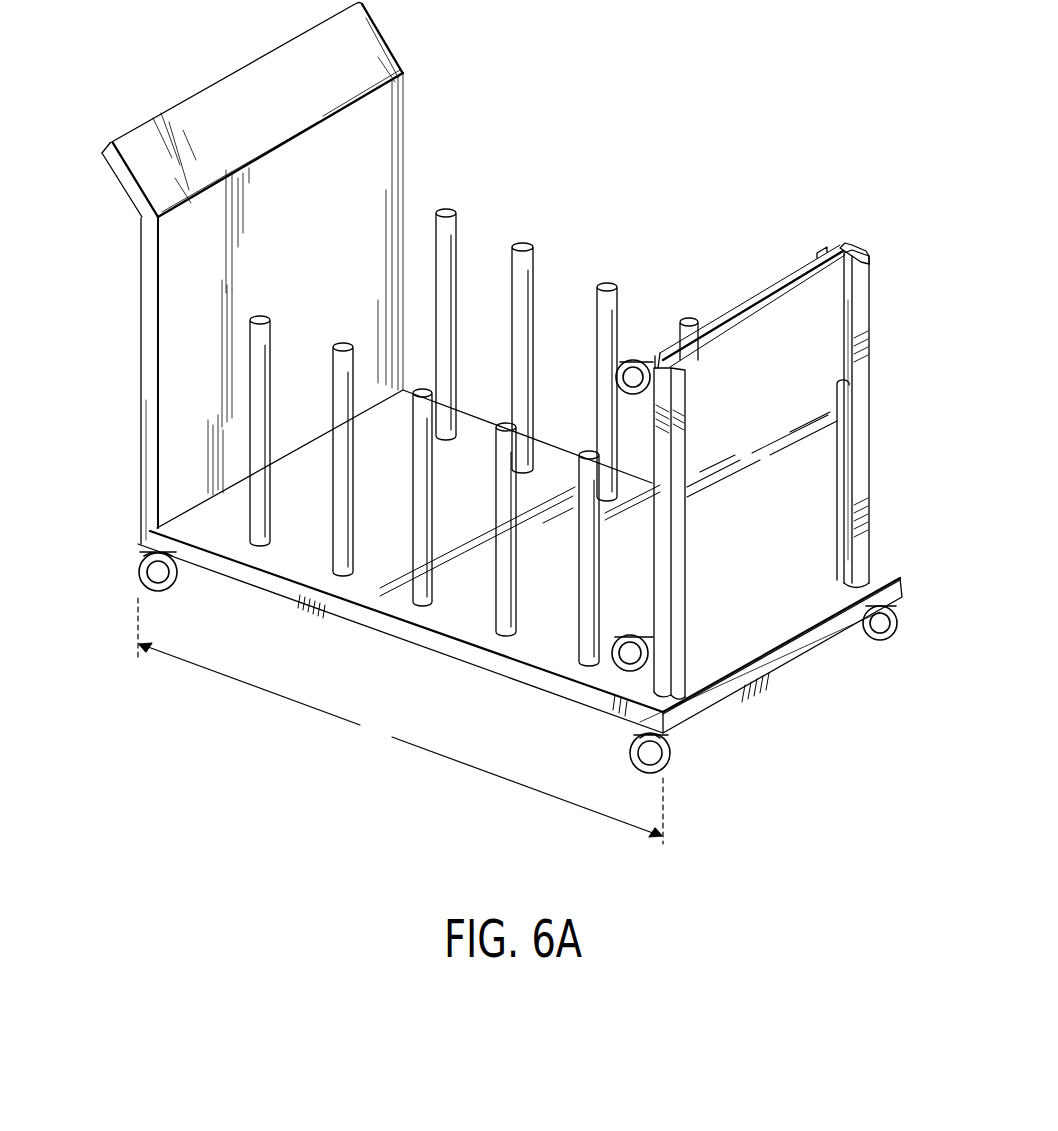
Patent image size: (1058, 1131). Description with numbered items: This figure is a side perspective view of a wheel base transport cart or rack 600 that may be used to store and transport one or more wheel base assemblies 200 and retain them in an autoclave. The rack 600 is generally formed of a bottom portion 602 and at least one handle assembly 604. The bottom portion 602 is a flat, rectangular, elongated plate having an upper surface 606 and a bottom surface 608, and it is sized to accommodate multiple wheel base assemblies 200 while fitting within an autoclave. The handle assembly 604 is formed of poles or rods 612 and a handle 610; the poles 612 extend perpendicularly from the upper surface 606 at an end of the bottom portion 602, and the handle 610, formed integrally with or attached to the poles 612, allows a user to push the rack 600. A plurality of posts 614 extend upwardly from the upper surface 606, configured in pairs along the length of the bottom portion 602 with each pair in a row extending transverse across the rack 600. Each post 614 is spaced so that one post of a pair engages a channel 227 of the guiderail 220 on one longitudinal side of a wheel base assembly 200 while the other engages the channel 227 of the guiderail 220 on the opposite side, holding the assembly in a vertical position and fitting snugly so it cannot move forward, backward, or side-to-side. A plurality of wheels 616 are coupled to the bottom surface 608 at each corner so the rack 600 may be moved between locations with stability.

The wheel base transport cart or rack 600 is at (204, 732).
The bottom portion 602 is at (799, 656).
The handle assembly 604 is at (148, 388).
The upper surface 606 is at (355, 594).
The bottom surface 608 is at (263, 588).
The handle 610 is at (230, 95).
The poles or rods 612 is at (135, 218).
The posts 614 is at (423, 547).
The wheels 616 is at (638, 742).
The wheel base assembly 200 is at (874, 506).
The guiderail 220 is at (860, 380).
The channel 227 is at (853, 249).